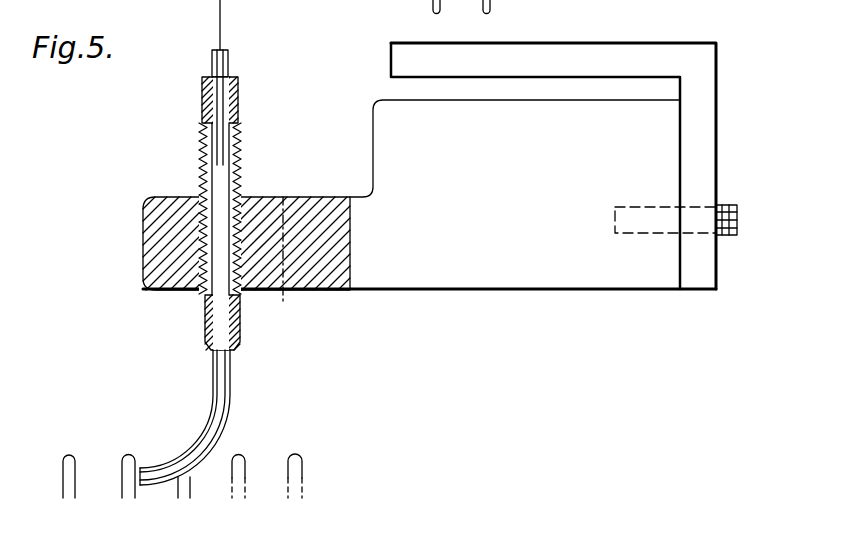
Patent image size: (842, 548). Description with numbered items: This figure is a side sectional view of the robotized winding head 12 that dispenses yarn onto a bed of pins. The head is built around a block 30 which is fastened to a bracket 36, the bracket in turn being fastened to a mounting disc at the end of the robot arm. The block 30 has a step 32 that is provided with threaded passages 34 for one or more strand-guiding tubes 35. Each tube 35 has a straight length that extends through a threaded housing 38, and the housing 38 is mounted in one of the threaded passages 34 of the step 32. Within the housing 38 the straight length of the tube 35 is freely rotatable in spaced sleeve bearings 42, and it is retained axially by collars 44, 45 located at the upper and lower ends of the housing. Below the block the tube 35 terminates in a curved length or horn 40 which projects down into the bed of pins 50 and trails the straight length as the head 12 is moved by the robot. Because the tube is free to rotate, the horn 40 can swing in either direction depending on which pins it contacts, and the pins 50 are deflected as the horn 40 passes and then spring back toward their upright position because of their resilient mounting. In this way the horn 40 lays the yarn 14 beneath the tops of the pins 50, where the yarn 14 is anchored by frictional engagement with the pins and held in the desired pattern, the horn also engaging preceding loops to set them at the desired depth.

The robotized winding head 12 is at (512, 298).
The yarn 14 is at (160, 487).
The block 30 is at (592, 268).
The step 32 is at (328, 270).
The threaded passage 34 is at (245, 270).
The strand-guiding tube 35 is at (230, 62).
The bracket 36 is at (648, 55).
The threaded housing 38 is at (201, 190).
The horn 40 is at (212, 427).
The sleeve bearing 42 is at (232, 133).
The collar 44 is at (203, 112).
The collar 45 is at (205, 334).
The pin 50 is at (292, 478).